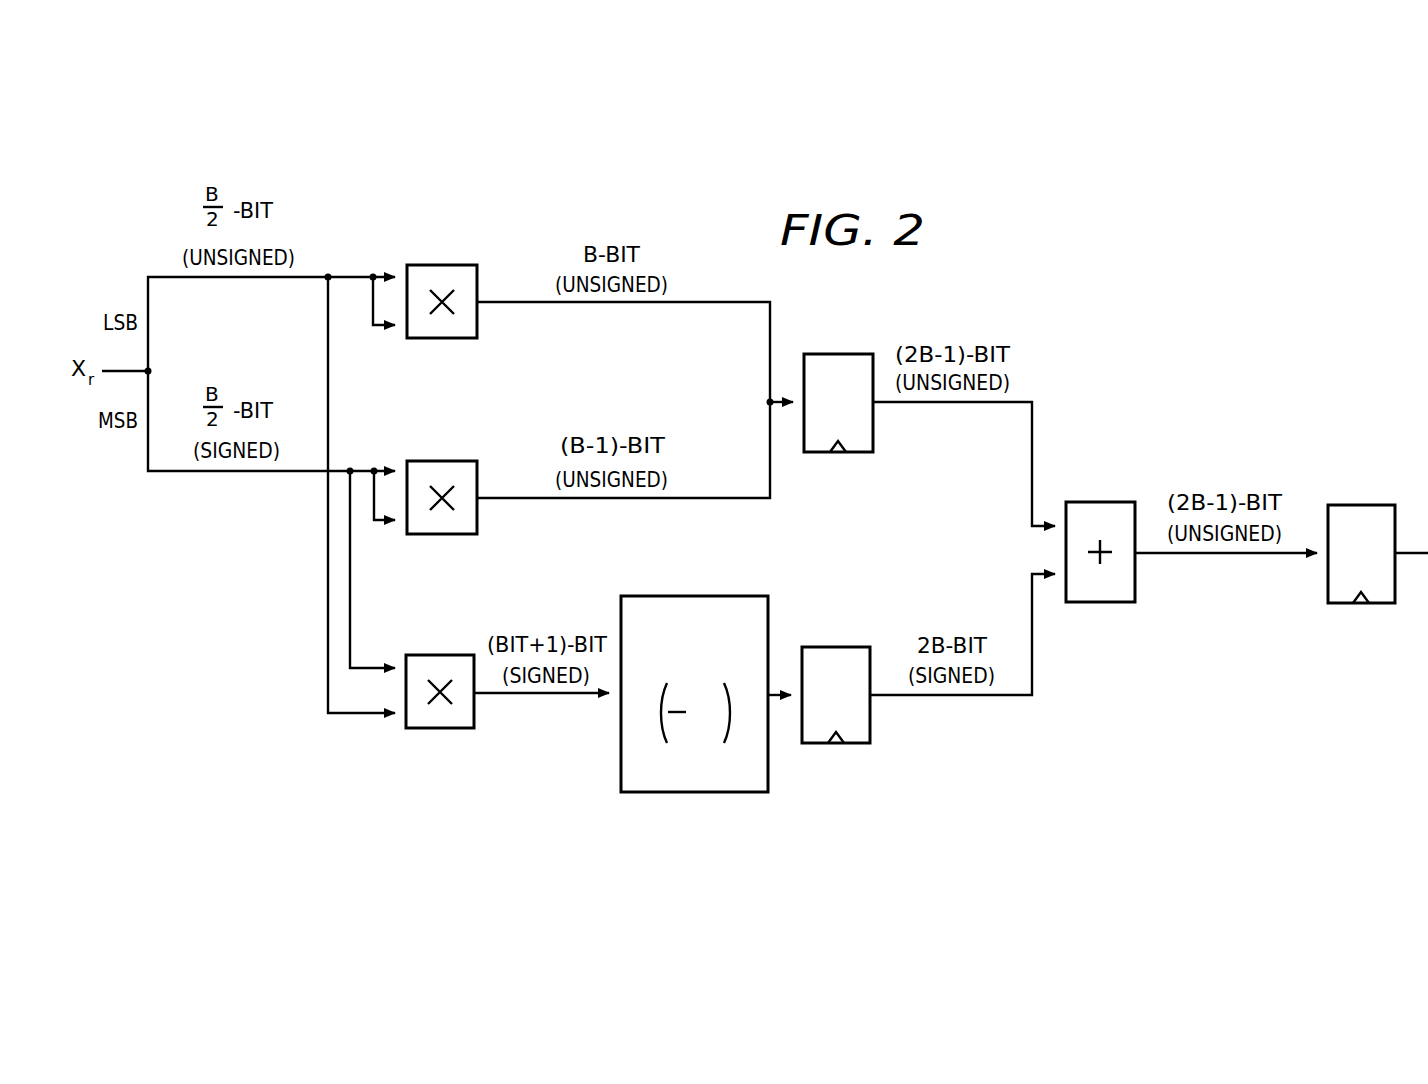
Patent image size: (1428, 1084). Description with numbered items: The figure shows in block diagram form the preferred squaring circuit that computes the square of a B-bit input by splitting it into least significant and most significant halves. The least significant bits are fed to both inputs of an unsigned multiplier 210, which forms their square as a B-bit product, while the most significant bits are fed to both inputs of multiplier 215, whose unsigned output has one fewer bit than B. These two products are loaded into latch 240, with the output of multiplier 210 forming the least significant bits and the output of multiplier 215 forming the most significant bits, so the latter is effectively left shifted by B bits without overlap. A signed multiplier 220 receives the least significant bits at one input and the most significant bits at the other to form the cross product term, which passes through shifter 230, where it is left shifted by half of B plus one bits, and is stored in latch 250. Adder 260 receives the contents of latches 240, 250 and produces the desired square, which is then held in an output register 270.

The multiplier 210 is at (440, 265).
The multiplier 215 is at (440, 461).
The multiplier 220 is at (440, 728).
The shifter 230 is at (693, 792).
The latch 240 is at (838, 354).
The latch 250 is at (836, 647).
The adder 260 is at (1100, 502).
The register D 270 is at (1360, 505).